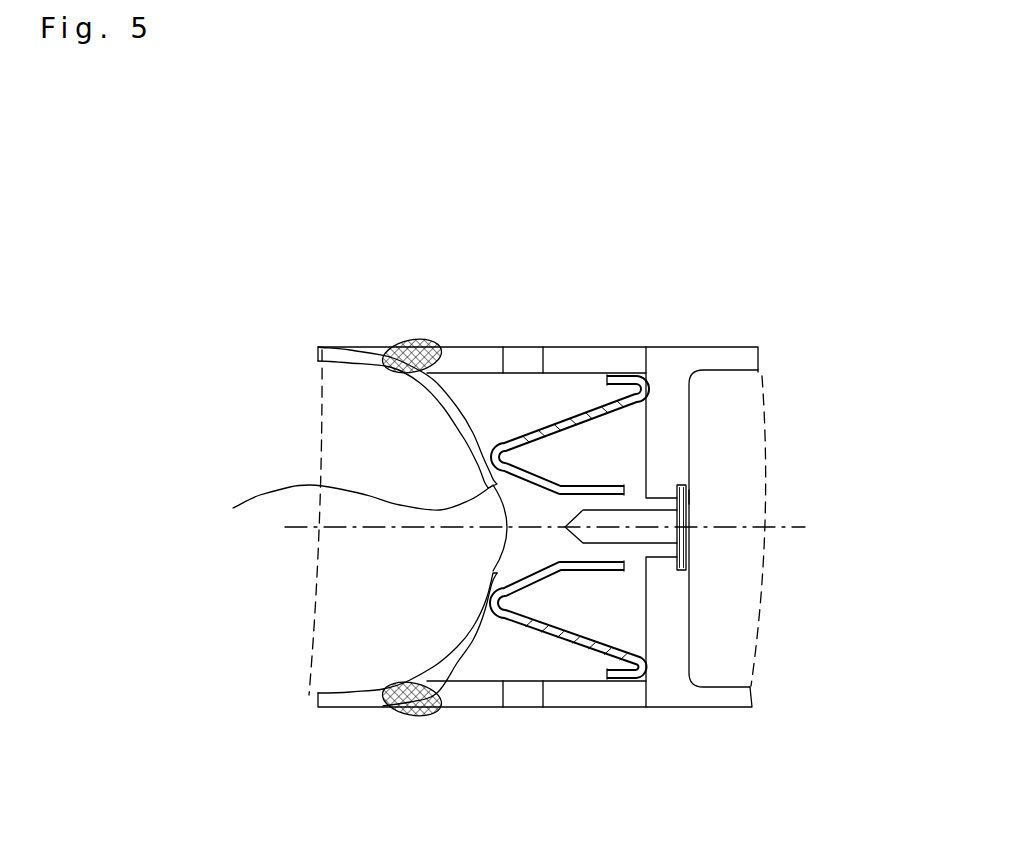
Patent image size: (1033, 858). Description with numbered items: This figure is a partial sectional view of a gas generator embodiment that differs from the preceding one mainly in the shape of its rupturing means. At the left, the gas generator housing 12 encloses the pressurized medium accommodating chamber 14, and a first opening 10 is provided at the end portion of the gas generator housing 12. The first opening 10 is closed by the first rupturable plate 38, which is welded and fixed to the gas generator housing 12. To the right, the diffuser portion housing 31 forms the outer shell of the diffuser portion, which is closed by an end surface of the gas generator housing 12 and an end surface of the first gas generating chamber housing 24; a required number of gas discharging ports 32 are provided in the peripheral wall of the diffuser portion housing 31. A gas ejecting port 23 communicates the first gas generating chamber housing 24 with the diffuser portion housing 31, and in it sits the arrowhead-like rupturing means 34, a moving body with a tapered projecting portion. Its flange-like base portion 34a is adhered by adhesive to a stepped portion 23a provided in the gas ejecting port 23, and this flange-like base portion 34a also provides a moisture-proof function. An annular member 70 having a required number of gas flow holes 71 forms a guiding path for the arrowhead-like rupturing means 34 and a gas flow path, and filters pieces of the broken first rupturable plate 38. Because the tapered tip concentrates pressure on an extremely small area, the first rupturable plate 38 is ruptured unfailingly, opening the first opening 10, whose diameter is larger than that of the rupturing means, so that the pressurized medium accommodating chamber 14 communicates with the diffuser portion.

The first opening 10 is at (337, 511).
The gas generator housing 12 is at (342, 353).
The pressurized medium accommodating chamber 14 is at (392, 453).
The gas ejecting port 23 is at (663, 552).
The stepped portion 23a is at (690, 497).
The first gas generating chamber housing 24 is at (720, 357).
The diffuser portion housing 31 is at (603, 357).
The gas discharging ports 32 is at (518, 353).
The arrowhead-like rupturing means 34 is at (690, 513).
The flange-like base portion 34a is at (690, 555).
The first rupturable plate 38 is at (503, 542).
The annular member 70 is at (497, 613).
The gas flow holes 71 is at (564, 640).